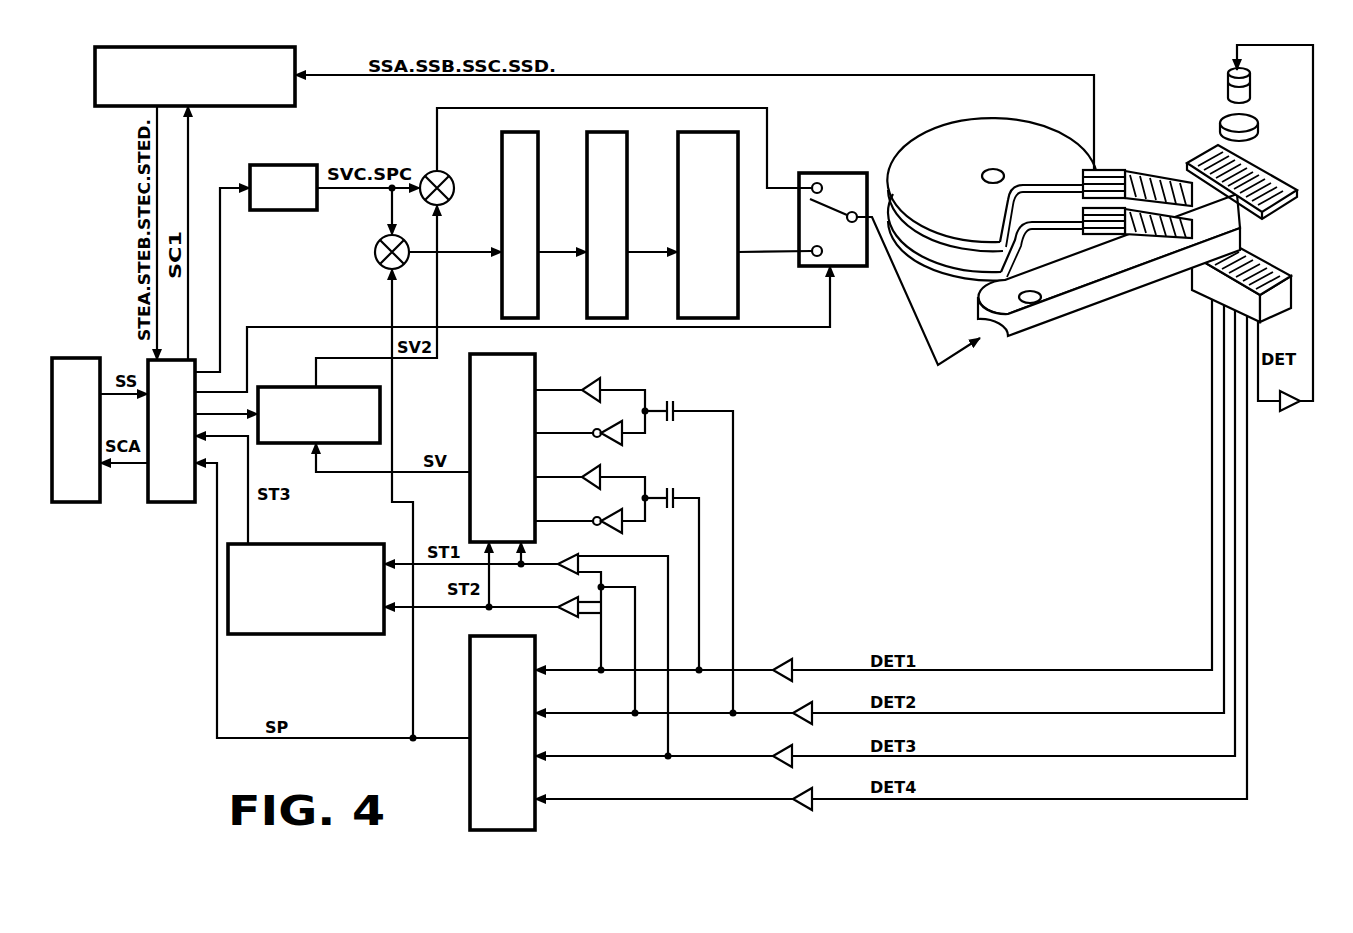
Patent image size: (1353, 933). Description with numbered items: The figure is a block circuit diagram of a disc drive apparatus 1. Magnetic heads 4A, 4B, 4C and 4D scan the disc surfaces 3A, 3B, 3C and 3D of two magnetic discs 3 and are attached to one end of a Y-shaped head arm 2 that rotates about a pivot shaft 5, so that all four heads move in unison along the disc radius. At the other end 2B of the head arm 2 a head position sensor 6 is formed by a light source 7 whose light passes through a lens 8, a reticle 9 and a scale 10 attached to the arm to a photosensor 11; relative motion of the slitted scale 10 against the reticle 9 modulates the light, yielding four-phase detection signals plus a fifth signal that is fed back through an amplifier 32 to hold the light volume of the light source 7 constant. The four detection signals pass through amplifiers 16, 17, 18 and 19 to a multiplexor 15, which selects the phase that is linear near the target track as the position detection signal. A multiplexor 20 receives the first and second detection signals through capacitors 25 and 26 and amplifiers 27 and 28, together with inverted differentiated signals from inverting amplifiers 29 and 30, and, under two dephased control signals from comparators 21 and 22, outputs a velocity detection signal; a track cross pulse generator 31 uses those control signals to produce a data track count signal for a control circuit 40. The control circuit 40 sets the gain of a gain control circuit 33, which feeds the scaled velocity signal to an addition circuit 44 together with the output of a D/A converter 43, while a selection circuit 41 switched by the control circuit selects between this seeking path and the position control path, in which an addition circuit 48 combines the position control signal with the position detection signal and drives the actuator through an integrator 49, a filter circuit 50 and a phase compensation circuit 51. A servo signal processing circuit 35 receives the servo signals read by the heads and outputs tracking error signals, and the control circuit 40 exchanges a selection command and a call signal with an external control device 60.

The disc drive apparatus 1 is at (920, 64).
The head arm 2 is at (1109, 249).
The other end of head arm 2B is at (1197, 200).
The magnetic disc 3 is at (1016, 199).
The disc surface 3A is at (918, 163).
The disc surface 3B is at (1003, 213).
The disc surface 3C is at (962, 247).
The disc surface 3D is at (973, 270).
The magnetic head 4A is at (1096, 177).
The magnetic head 4B is at (1081, 183).
The magnetic head 4C is at (1082, 210).
The magnetic head 4D is at (1083, 232).
The pivot shaft 5 is at (1036, 303).
The head position sensor 6 is at (1318, 95).
The light source 7 is at (1252, 88).
The lens 8 is at (1259, 124).
The reticle 9 is at (1262, 262).
The scale 10 is at (1260, 173).
The photosensor 11 is at (1200, 280).
The multiplexor 15 is at (471, 778).
The amplifier 16 is at (778, 660).
The amplifier 17 is at (810, 707).
The amplifier 18 is at (776, 750).
The amplifier 19 is at (812, 793).
The multiplexor 20 is at (470, 427).
The comparator 21 is at (572, 556).
The comparator 22 is at (565, 604).
The capacitor 25 is at (676, 402).
The capacitor 26 is at (676, 494).
The amplifier 27 is at (604, 386).
The amplifier 28 is at (599, 472).
The inverting amplifier 29 is at (632, 443).
The inverting amplifier 30 is at (624, 534).
The track cross pulse generator 31 is at (320, 636).
The amplifier 32 is at (1288, 414).
The gain control circuit 33 is at (285, 387).
The servo signal processing circuit 35 is at (296, 64).
The control circuit 40 is at (170, 503).
The selection circuit 41 is at (836, 173).
The D/A converter 43 is at (288, 165).
The addition circuit 44 is at (448, 174).
The addition circuit 48 is at (375, 253).
The integrator 49 is at (541, 192).
The filter circuit 50 is at (629, 190).
The phase compensation circuit 51 is at (741, 240).
The control device 60 is at (80, 503).